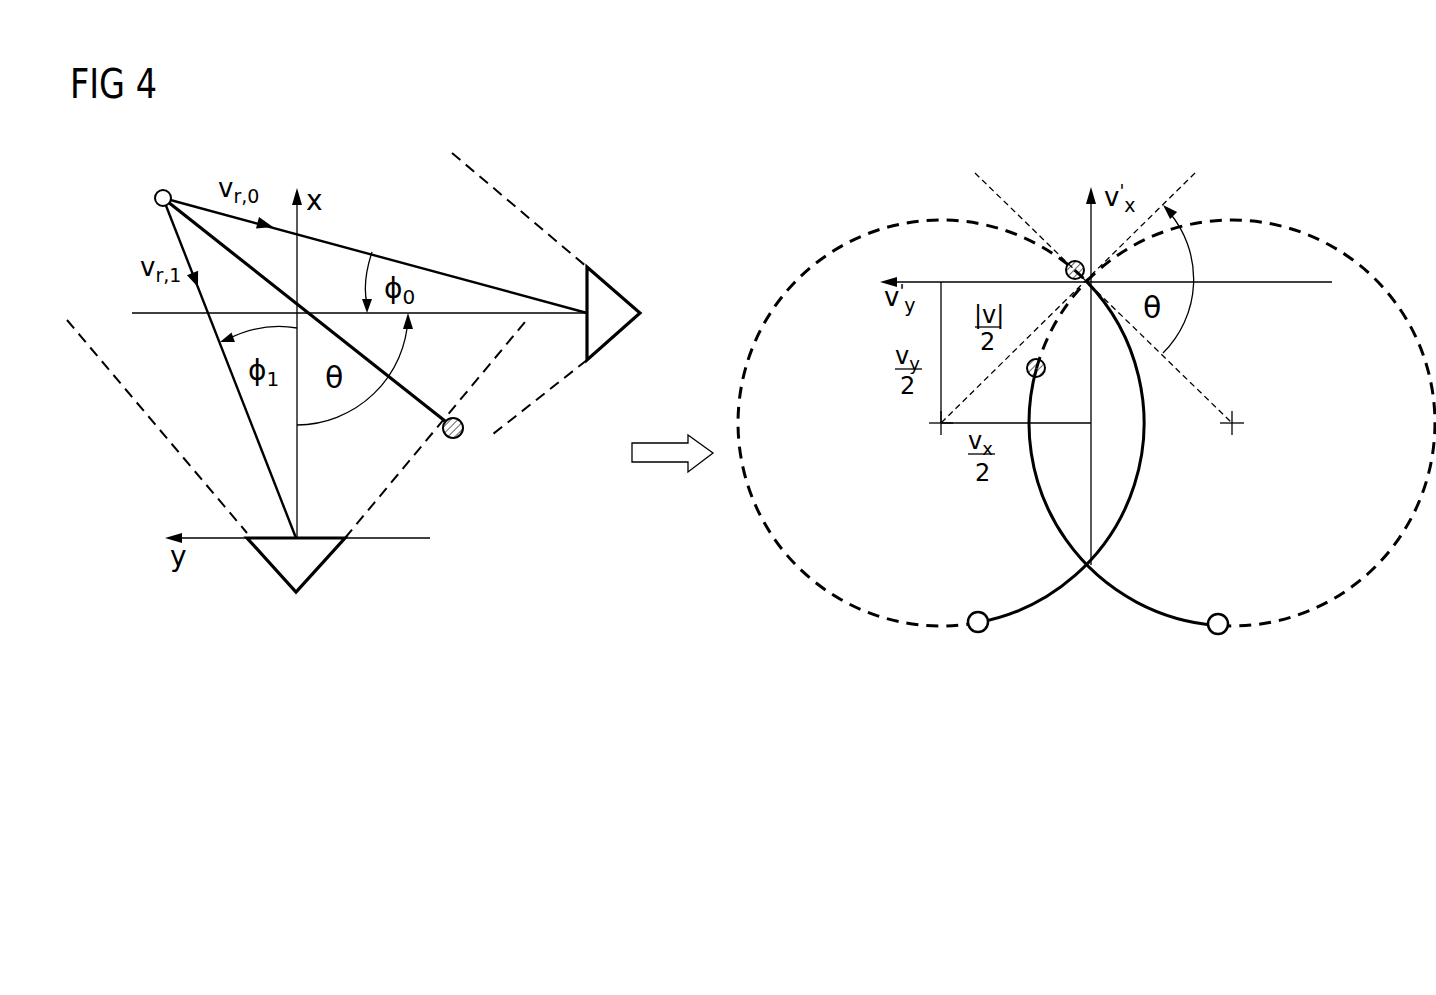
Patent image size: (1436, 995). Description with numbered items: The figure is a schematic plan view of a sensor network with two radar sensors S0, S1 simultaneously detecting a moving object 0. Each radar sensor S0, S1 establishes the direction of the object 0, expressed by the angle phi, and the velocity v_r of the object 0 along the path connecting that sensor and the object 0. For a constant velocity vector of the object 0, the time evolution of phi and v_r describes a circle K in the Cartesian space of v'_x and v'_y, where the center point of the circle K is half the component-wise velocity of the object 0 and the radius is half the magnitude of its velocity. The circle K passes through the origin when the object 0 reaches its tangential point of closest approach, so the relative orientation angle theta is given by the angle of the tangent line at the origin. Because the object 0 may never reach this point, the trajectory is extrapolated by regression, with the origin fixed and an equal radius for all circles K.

The object 0 is at (161, 189).
The circle K is at (926, 220).
The radar sensor S0 is at (608, 330).
The radar sensor S1 is at (310, 565).